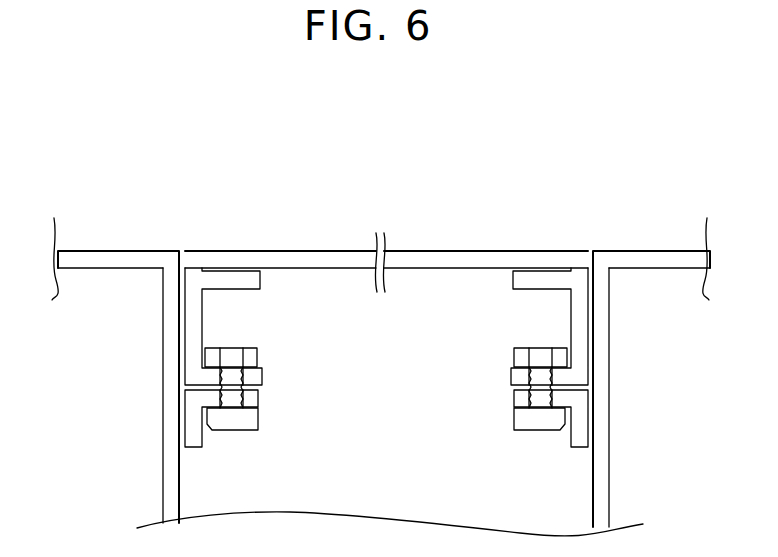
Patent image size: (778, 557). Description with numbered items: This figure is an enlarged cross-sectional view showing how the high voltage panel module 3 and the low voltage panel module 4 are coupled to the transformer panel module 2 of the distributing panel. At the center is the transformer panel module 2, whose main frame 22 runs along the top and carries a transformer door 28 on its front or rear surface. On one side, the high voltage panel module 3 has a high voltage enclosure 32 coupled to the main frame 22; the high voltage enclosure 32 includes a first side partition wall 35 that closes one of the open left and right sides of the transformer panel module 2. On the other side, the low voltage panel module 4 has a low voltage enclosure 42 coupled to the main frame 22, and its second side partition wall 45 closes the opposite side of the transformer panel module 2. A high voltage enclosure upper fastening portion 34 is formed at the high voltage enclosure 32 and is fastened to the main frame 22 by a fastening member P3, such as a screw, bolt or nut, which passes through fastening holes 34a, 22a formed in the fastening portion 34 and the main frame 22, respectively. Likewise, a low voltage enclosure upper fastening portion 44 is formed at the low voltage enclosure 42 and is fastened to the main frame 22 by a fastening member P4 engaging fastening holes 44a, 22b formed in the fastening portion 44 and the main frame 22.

The transformer panel module 2 is at (393, 204).
The high voltage panel module 3 is at (80, 204).
The low voltage panel module 4 is at (640, 204).
The main frame 22 is at (215, 276).
The fastening hole 22a is at (262, 377).
The fastening hole 22b is at (510, 377).
The transformer door 28 is at (316, 258).
The high voltage enclosure 32 is at (112, 258).
The high voltage enclosure upper fastening portion 34 is at (185, 433).
The fastening hole 34a is at (246, 399).
The first side partition wall 35 is at (163, 332).
The low voltage enclosure 42 is at (660, 258).
The low voltage enclosure upper fastening portion 44 is at (588, 433).
The fastening hole 44a is at (526, 399).
The second side partition wall 45 is at (609, 333).
The fastening member P3 is at (235, 431).
The fastening member P4 is at (540, 431).